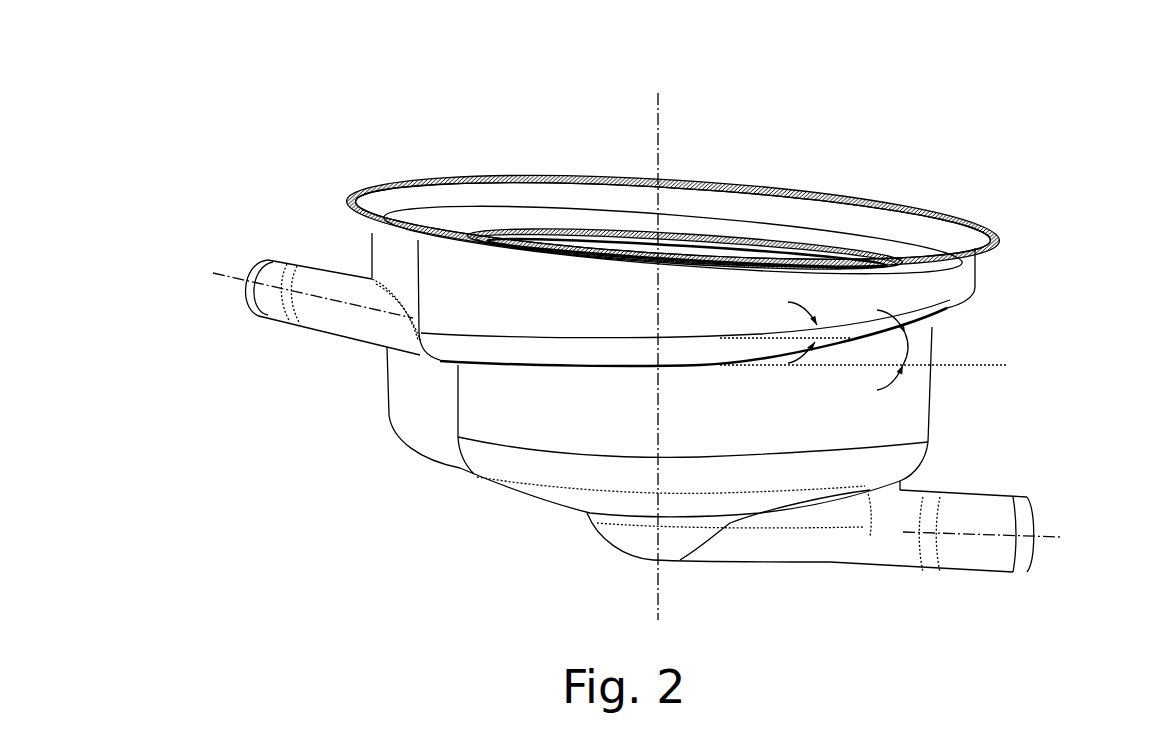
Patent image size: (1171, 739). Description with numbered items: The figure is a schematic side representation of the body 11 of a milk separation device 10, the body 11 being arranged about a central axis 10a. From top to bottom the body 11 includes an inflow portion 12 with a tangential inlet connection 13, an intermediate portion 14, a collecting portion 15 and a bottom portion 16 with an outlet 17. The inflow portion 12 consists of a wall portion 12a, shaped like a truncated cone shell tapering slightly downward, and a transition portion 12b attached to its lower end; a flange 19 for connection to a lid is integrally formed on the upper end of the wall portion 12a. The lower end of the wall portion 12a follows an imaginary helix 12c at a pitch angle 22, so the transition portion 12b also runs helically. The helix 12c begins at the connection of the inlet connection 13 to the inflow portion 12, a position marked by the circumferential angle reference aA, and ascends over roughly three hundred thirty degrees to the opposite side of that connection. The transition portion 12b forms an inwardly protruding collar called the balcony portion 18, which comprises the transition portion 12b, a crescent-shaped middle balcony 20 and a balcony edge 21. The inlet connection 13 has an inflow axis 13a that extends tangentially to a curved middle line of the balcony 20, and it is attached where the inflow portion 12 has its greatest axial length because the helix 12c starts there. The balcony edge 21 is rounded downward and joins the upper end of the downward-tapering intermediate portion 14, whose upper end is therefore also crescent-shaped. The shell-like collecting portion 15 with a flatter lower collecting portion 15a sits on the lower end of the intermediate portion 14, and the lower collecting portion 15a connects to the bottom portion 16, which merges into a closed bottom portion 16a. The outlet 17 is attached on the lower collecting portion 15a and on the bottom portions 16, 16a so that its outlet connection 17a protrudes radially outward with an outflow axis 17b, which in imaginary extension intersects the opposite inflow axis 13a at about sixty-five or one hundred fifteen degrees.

The milk separation device 10 is at (343, 107).
The central axis 10a is at (660, 148).
The body 11 is at (1028, 380).
The inflow portion 12 is at (388, 258).
The wall portion 12a is at (437, 210).
The transition portion 12b is at (510, 223).
The imaginary helix 12c is at (760, 332).
The tangential inlet connection 13 is at (345, 322).
The inflow axis 13a is at (235, 277).
The intermediate portion 14 is at (473, 405).
The collecting portion 15 is at (487, 457).
The lower collecting portion 15a is at (523, 490).
The bottom portion 16 is at (622, 520).
The closed bottom portion 16a is at (647, 545).
The outlet 17 is at (783, 553).
The outlet connection 17a is at (995, 560).
The outflow axis 17b is at (1047, 533).
The balcony portion 18 is at (603, 370).
The flange 19 is at (950, 210).
The balcony 20 is at (543, 237).
The balcony edge 21 is at (603, 245).
The pitch angle 22 is at (820, 327).
The circumferential angle position αA aA is at (416, 338).